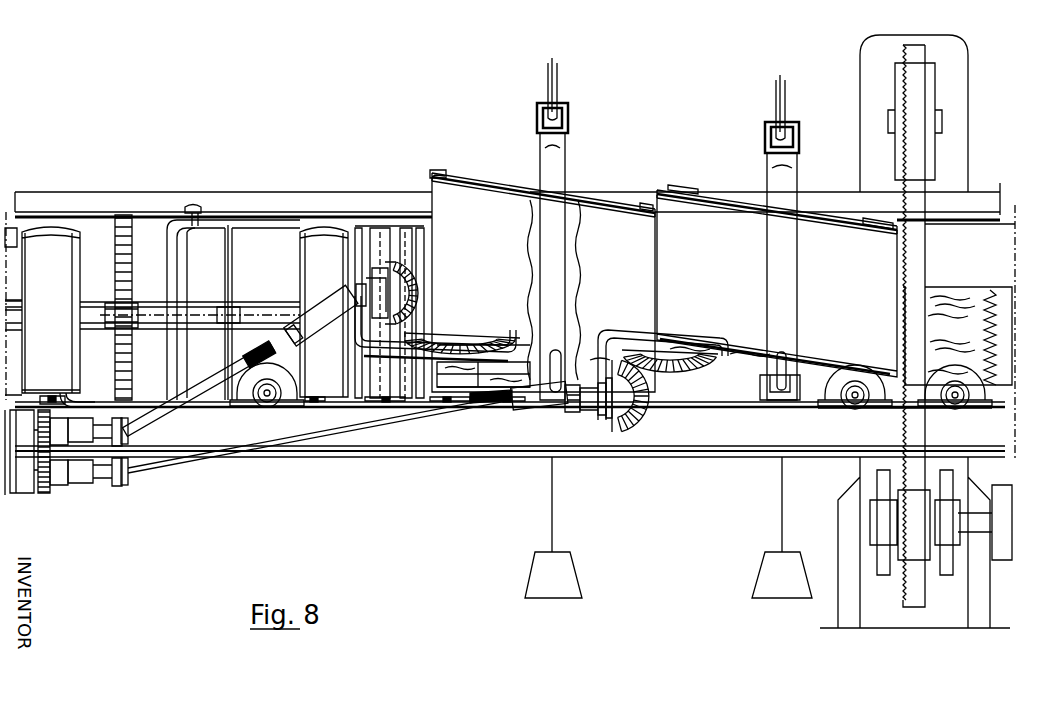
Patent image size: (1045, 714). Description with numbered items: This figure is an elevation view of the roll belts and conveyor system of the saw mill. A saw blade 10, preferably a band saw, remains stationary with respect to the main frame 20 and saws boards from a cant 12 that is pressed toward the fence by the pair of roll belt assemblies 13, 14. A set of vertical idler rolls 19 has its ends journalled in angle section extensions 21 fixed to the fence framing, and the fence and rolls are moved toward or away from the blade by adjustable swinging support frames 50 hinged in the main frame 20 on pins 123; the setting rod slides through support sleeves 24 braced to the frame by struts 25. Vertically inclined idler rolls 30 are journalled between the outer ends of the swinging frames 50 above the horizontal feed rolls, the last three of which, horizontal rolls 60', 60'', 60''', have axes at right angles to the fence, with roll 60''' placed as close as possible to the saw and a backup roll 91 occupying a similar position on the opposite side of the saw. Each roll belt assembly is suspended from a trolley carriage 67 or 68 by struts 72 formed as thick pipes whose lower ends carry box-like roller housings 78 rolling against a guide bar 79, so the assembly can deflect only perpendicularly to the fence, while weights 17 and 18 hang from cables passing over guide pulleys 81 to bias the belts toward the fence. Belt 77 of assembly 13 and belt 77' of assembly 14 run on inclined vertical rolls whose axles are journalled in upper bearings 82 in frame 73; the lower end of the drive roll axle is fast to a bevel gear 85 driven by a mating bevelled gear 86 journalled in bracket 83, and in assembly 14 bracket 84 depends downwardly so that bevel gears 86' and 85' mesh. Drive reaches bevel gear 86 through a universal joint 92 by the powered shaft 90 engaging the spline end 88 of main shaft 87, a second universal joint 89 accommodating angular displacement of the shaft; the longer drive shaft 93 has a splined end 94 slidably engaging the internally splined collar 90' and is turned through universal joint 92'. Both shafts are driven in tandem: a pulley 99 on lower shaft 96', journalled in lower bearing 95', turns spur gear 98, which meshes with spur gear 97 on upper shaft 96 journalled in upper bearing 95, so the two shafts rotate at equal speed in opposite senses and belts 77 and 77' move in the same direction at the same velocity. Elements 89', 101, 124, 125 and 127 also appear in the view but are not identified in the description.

The saw blade 10 is at (922, 232).
The cant 12 is at (950, 292).
The roll belt assembly 13 is at (467, 148).
The roll belt assembly 14 is at (656, 148).
The weight 17 is at (575, 586).
The weight 18 is at (763, 586).
The vertical idler rolls 19 is at (380, 228).
The main frame 20 is at (705, 455).
The angle section extensions 21 is at (325, 228).
The support sleeves 24 is at (110, 305).
The struts 25 is at (116, 243).
The vertically inclined idler rolls 30 is at (50, 232).
The swinging support frames 50 is at (15, 235).
The horizontal roll 60' is at (267, 438).
The horizontal roll 60'' is at (540, 449).
The horizontal roll 60''' is at (894, 439).
The trolley carriage 67 is at (568, 118).
The trolley carriage 68 is at (770, 126).
The struts 72 is at (565, 166).
The frame 73 is at (500, 185).
The belt 77 is at (617, 265).
The belt 77' is at (837, 280).
The roller housings 78 is at (778, 402).
The guide bar 79 is at (560, 352).
The guide pulleys 81 is at (557, 68).
The upper bearing 82 is at (442, 174).
The bracket 83 is at (372, 346).
The bracket 84 is at (609, 420).
The bevel gear 85 is at (462, 318).
The bevel gear 85' is at (670, 431).
The bevelled gear 86 is at (421, 270).
The bevel gear 86' is at (633, 436).
The main shaft 87 is at (197, 313).
The spline end 88 is at (262, 312).
The universal joint 89 is at (146, 431).
The bracket 89' is at (142, 494).
The powered shaft 90 is at (240, 358).
The internally splined collar 90' is at (522, 447).
The backup roll 91 is at (925, 406).
The universal joint 92 is at (347, 286).
The universal joint 92' is at (586, 448).
The drive shaft 93 is at (198, 464).
The splined end 94 is at (495, 402).
The upper bearing 95 is at (90, 476).
The lower bearing 95' is at (86, 507).
The horizontal shaft 96 is at (113, 476).
The horizontal shaft 96' is at (106, 506).
The spur gear 97 is at (80, 407).
The spur gear 98 is at (45, 495).
The pulley 99 is at (12, 497).
The shaft 101 is at (35, 496).
The pins 123 is at (193, 205).
The mounting pad 124 is at (447, 402).
The pipe 125 is at (263, 218).
The rail 127 is at (130, 205).